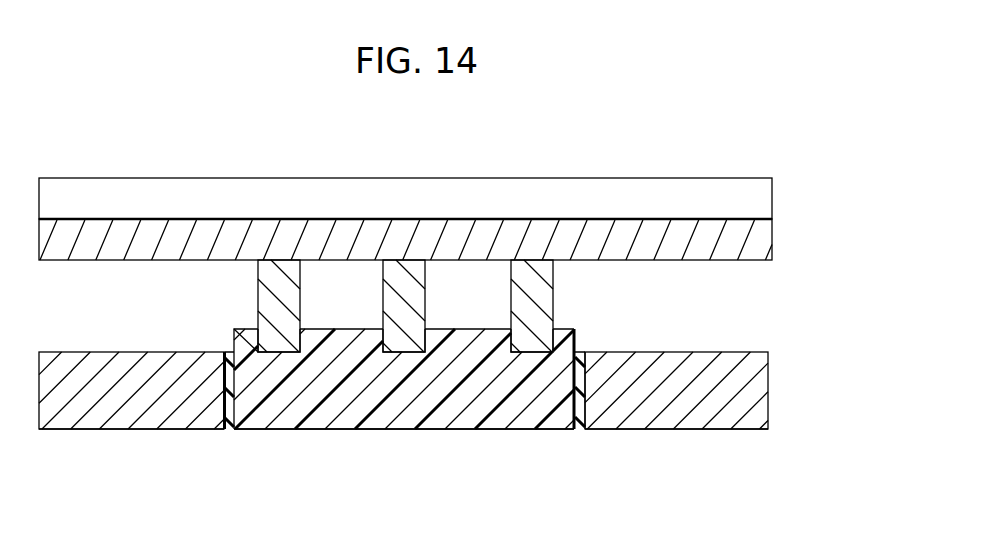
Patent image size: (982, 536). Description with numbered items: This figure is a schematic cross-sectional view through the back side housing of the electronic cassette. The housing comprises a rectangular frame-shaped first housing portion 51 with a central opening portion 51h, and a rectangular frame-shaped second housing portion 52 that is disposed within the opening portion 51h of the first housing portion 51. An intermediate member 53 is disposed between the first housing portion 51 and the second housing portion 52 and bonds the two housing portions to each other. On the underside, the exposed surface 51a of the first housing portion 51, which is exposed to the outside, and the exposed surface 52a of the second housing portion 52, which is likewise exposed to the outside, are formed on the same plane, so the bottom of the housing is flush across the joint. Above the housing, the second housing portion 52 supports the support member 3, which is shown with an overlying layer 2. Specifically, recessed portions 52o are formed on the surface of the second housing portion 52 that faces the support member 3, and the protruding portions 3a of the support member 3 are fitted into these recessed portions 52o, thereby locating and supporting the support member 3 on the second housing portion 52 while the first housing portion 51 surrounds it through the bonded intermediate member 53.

The substrate 2 is at (766, 200).
The support member 3 is at (766, 247).
The protruding portion 3a is at (283, 273).
The first housing portion 51 is at (85, 420).
The exposed surface 51a is at (183, 430).
The opening portion 51h is at (230, 430).
The second housing portion 52 is at (342, 423).
The exposed surface 52a is at (492, 430).
The recessed portion 52o is at (260, 338).
The intermediate member 53 is at (230, 350).